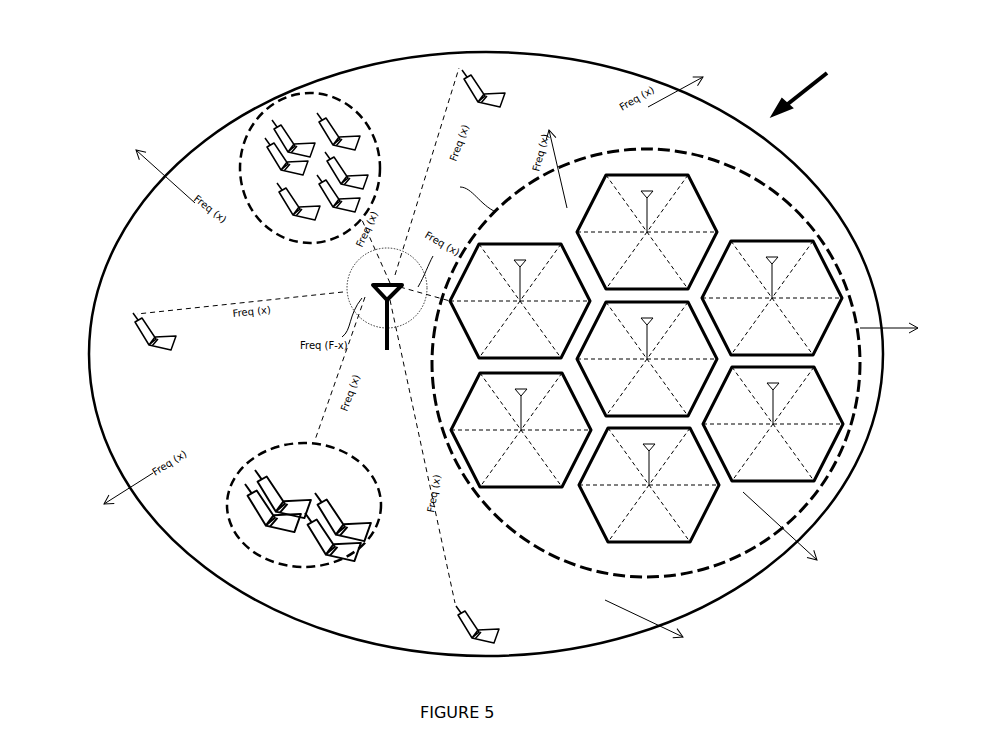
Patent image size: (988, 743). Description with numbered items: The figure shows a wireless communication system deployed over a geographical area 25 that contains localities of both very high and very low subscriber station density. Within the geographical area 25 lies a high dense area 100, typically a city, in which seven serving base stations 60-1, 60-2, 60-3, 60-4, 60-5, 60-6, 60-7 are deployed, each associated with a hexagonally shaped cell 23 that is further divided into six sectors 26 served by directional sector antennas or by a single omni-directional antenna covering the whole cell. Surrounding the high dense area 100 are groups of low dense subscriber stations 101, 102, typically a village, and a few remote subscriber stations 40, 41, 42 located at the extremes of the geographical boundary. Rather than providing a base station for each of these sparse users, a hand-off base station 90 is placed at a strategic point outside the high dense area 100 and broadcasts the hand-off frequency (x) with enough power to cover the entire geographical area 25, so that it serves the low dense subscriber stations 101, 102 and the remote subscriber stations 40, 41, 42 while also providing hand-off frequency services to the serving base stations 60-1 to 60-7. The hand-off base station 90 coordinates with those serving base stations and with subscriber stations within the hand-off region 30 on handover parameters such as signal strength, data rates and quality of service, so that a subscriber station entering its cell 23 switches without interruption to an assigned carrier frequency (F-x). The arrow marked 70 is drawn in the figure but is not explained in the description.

The cell 23 is at (352, 286).
The geographical area 25 is at (800, 169).
The sector 26 is at (646, 358).
The hand-off region 30 is at (514, 360).
The remote subscriber station 40 is at (505, 101).
The remote subscriber station 41 is at (178, 343).
The remote subscriber station 42 is at (500, 627).
The serving base station 60-1 is at (650, 326).
The serving base station 60-2 is at (650, 191).
The serving base station 60-3 is at (774, 260).
The serving base station 60-4 is at (776, 394).
The serving base station 60-5 is at (650, 462).
The serving base station 60-6 is at (519, 398).
The serving base station 60-7 is at (522, 262).
The network 70 is at (794, 104).
The hand-off base station 90 is at (372, 287).
The high dense area 100 is at (463, 195).
The low dense subscriber stations 101 is at (252, 460).
The low dense subscriber stations 102 is at (381, 140).